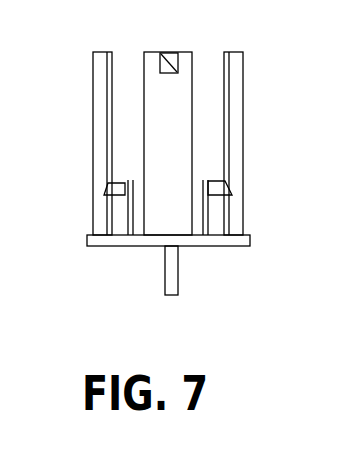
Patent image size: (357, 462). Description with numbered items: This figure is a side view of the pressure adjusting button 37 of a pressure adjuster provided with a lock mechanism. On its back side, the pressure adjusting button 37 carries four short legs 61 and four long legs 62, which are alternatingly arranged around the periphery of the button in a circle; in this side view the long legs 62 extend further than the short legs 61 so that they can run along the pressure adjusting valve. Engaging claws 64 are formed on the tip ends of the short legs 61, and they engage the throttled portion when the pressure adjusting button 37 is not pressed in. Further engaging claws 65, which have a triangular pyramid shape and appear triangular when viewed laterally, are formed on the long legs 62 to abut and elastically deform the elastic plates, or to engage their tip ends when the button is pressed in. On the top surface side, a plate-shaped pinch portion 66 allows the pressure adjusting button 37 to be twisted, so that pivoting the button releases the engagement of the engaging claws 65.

The pressure adjusting button 37 is at (125, 246).
The short legs 61 is at (118, 216).
The long legs 62 is at (96, 58).
The engaging claws 64 is at (107, 190).
The engaging claws 65 is at (178, 54).
The pinch portion 66 is at (173, 289).